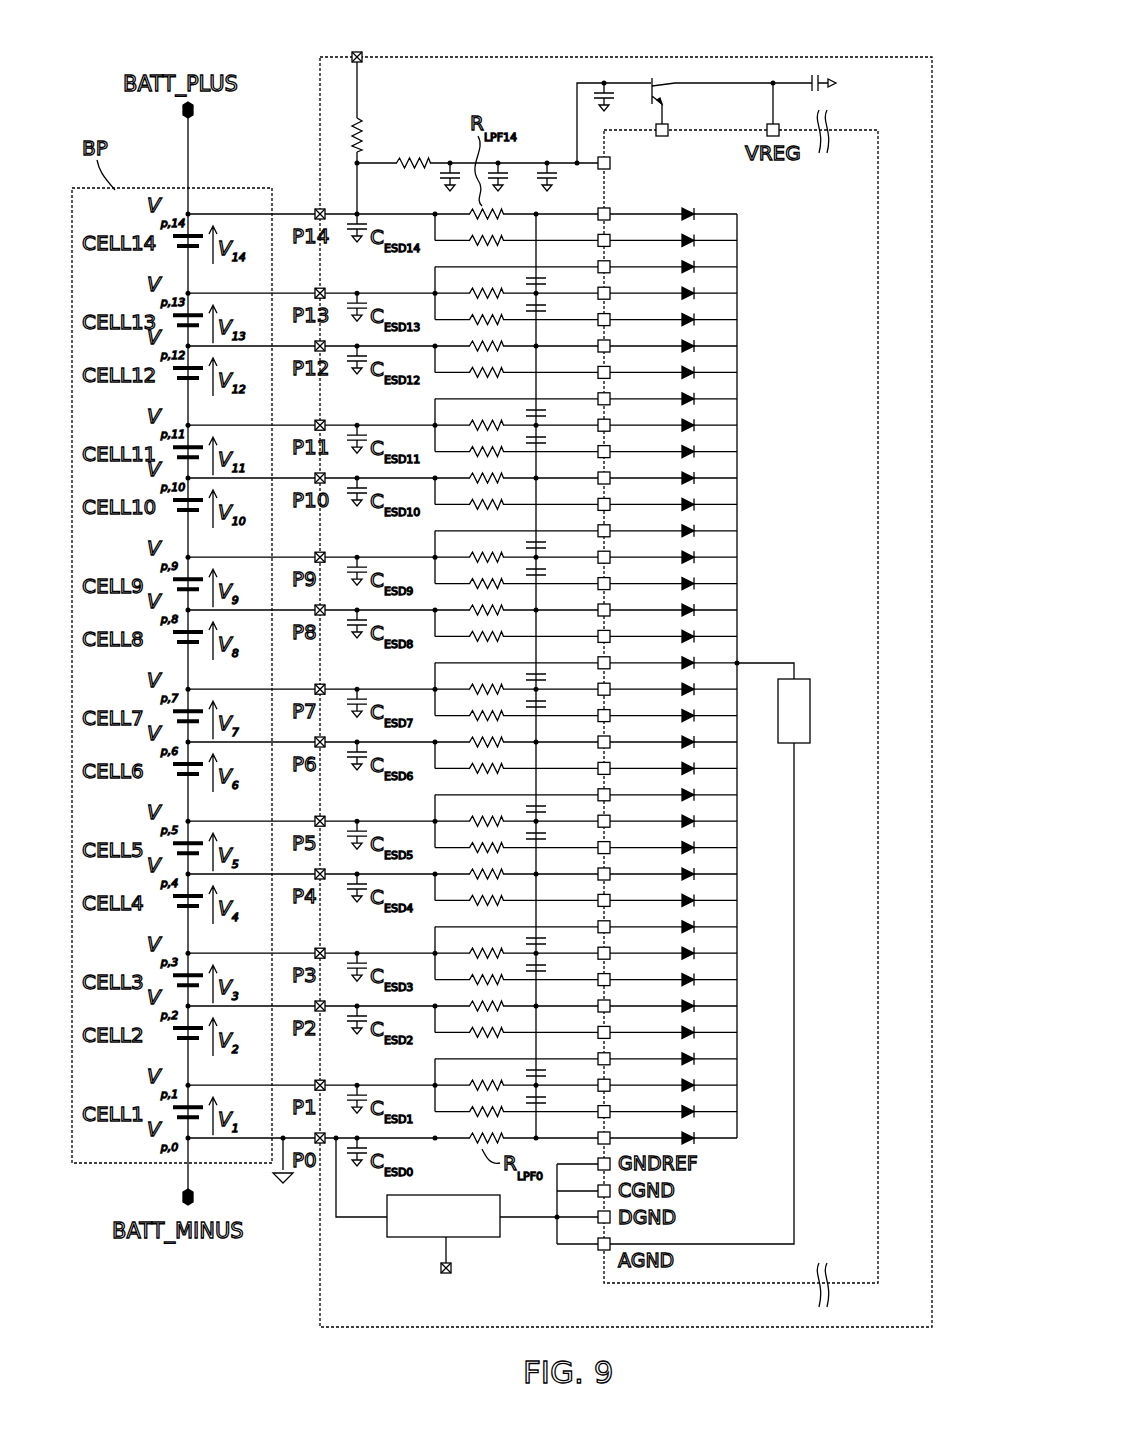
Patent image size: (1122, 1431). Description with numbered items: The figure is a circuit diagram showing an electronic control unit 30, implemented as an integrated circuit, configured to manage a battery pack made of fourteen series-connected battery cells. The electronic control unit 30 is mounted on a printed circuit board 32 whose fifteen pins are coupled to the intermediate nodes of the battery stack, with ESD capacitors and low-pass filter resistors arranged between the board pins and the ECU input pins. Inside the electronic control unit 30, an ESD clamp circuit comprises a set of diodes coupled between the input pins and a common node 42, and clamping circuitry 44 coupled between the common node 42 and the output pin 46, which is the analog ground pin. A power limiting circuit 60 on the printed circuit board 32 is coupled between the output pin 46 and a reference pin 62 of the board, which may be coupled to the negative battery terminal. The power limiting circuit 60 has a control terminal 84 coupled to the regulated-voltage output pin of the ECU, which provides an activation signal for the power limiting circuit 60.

The printed circuit board 32 is at (843, 57).
The electronic control unit 30 is at (868, 205).
The common node 42 is at (738, 662).
The clamping circuitry 44 is at (802, 683).
The power limiting circuit 60 is at (397, 1233).
The reference pin 62 is at (336, 1142).
The control terminal 84 is at (446, 1275).
The output pin 46 is at (600, 1246).